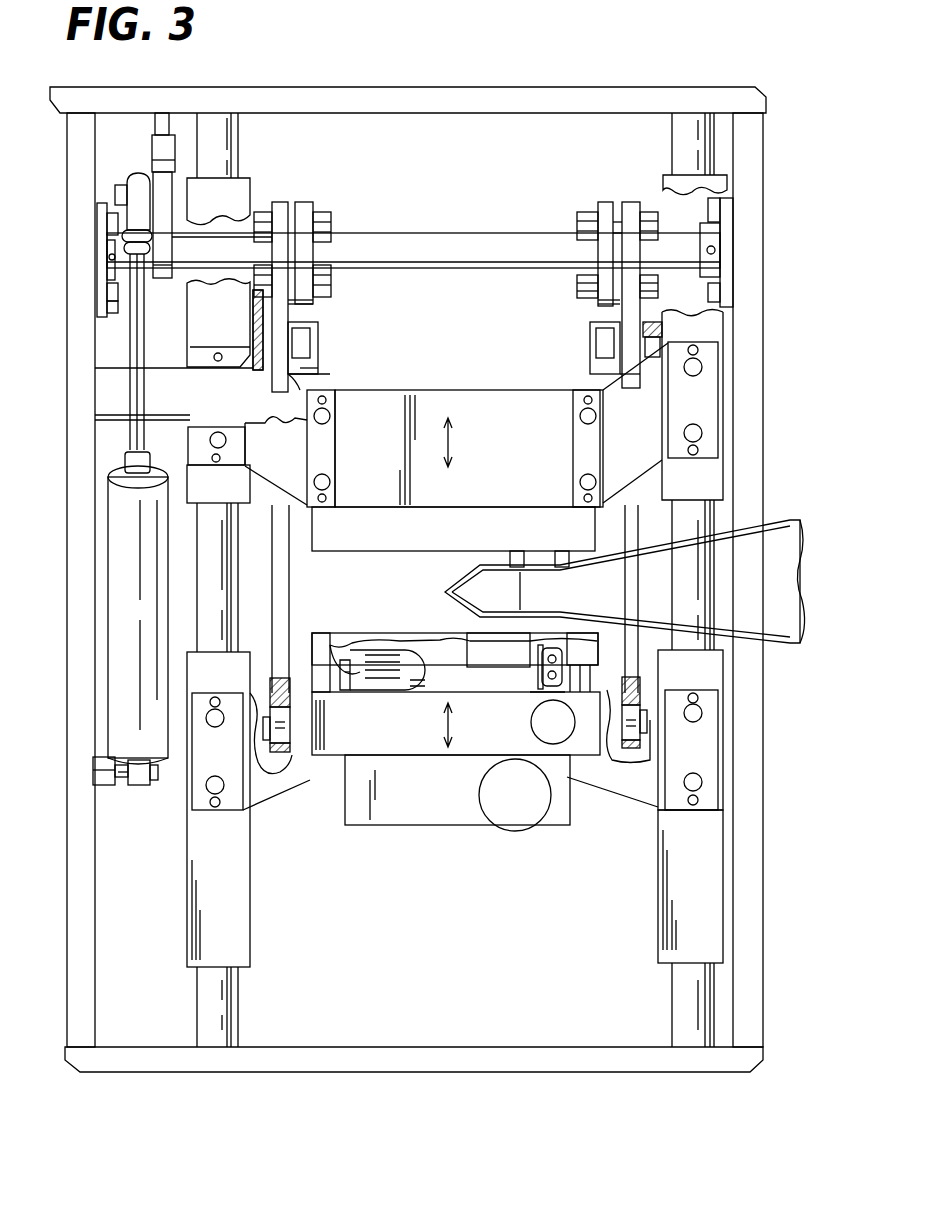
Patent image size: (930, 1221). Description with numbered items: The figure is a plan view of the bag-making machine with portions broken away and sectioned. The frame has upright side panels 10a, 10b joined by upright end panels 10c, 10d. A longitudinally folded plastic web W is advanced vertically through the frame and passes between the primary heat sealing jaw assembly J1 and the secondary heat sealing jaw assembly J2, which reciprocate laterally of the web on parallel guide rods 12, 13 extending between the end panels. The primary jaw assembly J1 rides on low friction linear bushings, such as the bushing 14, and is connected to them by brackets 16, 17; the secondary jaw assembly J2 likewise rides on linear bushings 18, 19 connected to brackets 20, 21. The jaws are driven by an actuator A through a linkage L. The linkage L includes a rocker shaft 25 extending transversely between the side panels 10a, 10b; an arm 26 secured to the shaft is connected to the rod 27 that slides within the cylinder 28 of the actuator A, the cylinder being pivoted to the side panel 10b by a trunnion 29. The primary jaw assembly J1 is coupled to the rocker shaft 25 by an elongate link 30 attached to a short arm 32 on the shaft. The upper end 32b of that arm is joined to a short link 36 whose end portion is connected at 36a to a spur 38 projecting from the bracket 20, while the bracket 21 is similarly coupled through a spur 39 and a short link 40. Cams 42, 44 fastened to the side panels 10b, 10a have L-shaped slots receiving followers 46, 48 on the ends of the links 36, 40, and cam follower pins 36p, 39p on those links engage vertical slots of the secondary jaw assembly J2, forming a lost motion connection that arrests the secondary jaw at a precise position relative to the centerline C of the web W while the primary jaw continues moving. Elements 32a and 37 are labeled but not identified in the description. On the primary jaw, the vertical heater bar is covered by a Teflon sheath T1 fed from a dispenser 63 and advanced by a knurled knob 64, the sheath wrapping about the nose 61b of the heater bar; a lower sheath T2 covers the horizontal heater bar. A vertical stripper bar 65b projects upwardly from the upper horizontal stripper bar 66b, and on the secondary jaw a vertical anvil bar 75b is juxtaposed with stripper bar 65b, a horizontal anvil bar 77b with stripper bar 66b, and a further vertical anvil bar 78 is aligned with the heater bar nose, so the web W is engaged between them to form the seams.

The upright side panel 10a is at (742, 868).
The upright side panel 10b is at (84, 900).
The upright end panel 10c is at (470, 92).
The upright end panel 10d is at (482, 1055).
The guide rod 12 is at (225, 1000).
The guide rod 13 is at (680, 985).
The linear bushing 14 is at (235, 910).
The bracket 16 is at (298, 785).
The bracket 17 is at (655, 780).
The linear bushing 18 is at (243, 185).
The linear bushing 19 is at (668, 182).
The bracket 20 is at (290, 470).
The bracket 21 is at (615, 392).
The rocker shaft 25 is at (428, 242).
The arm 26 is at (158, 153).
The actuator rod 27 is at (135, 332).
The cylinder 28 is at (160, 740).
The trunnion 29 is at (108, 790).
The elongate link 30 is at (282, 550).
The short arm 32 is at (335, 268).
The spacer 32a is at (300, 308).
The upper end of arm 32b is at (314, 198).
The short link 36 is at (280, 205).
The connection 36a is at (298, 330).
The cam follower pin 36p is at (300, 345).
The plate 37 is at (596, 212).
The spur 38 is at (300, 375).
The spur 39 is at (590, 345).
The cam follower pin 39p is at (605, 325).
The short link 40 is at (635, 205).
The cam 42 is at (265, 322).
The cam 44 is at (658, 322).
The follower 46 is at (258, 362).
The follower 48 is at (657, 345).
The nose of vertical heater bar 61b is at (572, 672).
The dispenser 63 is at (522, 805).
The knurled knob 64 is at (565, 738).
The vertical stripper bar 65b is at (523, 666).
The upper horizontal stripper bar 66b is at (326, 647).
The vertical anvil bar 75b is at (520, 540).
The horizontal anvil bar 77b is at (325, 545).
The anvil bar 78 is at (565, 548).
The actuator A is at (50, 755).
The centerline C is at (800, 645).
The primary heat sealing jaw assembly J1 is at (506, 736).
The secondary heat sealing jaw assembly J2 is at (410, 553).
The linkage L is at (52, 258).
The vertical Teflon sheath T1 is at (550, 658).
The lower Teflon sheath T2 is at (445, 668).
The folded plastic web W is at (452, 590).